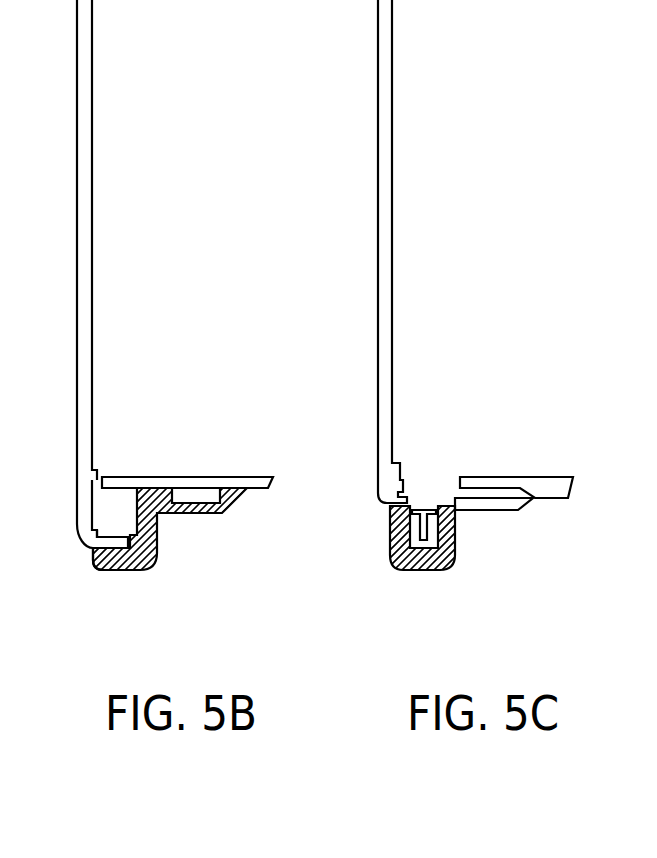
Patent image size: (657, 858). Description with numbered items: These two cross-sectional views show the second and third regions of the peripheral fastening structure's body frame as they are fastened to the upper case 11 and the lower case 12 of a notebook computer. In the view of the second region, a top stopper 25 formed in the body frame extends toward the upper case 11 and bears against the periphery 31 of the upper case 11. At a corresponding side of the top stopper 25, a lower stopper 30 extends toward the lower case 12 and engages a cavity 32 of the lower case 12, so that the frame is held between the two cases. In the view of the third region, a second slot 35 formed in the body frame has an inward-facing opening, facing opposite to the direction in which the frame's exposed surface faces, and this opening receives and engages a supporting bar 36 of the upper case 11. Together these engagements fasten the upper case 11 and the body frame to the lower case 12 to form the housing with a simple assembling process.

In FIG. 5B, the upper case 11 is at (77, 375).
In FIG. 5C, the upper case 11 is at (377, 400).
In FIG. 5B, the lower case 12 is at (248, 490).
In FIG. 5C, the lower case 12 is at (543, 477).
In FIG. 5B, the top stopper 25 is at (110, 568).
In FIG. 5B, the lower stopper 30 is at (155, 483).
In FIG. 5B, the periphery 31 is at (103, 530).
In FIG. 5B, the cavity 32 is at (207, 497).
In FIG. 5C, the second slot 35 is at (440, 547).
In FIG. 5C, the supporting bar 36 is at (412, 525).